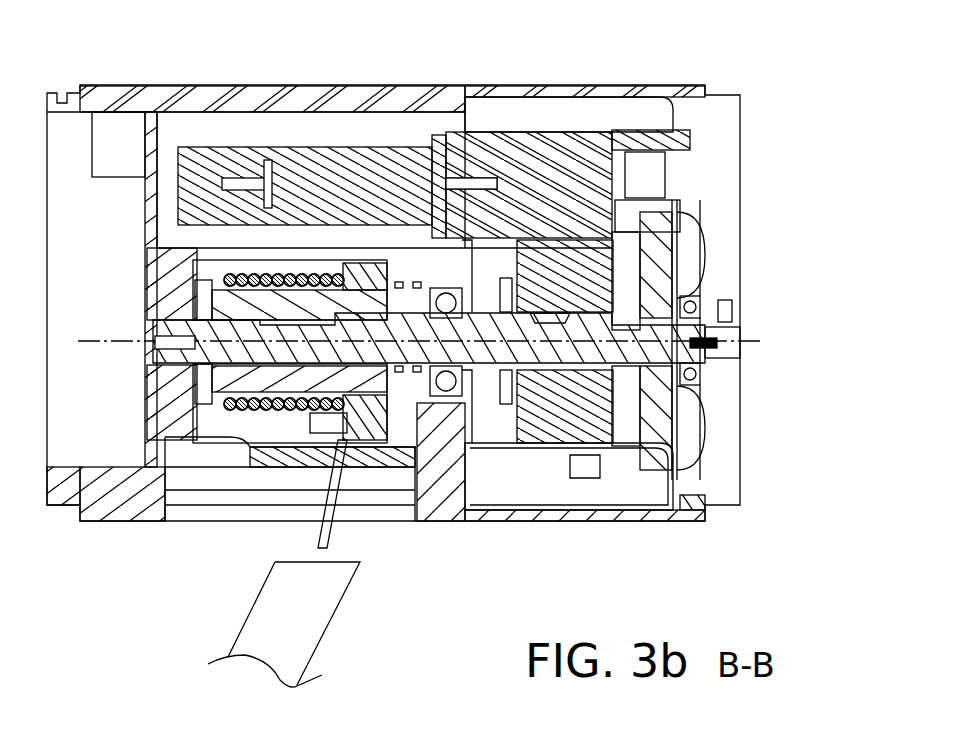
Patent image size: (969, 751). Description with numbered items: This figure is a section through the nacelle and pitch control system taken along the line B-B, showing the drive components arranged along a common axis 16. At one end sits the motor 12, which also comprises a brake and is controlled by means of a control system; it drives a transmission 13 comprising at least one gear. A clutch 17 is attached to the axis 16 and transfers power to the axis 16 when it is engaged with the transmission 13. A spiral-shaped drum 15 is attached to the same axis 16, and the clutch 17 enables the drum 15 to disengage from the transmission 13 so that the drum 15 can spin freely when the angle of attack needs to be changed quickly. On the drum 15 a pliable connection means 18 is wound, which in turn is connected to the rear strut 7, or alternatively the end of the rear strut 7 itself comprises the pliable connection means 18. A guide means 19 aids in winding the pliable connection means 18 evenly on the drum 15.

The motor 12 is at (350, 143).
The transmission 13 is at (543, 133).
The axis 16 is at (640, 345).
The spiral-shaped drum 15 is at (282, 380).
The guide means 19 is at (312, 413).
The pliable connection means 18 is at (323, 543).
The rear strut 7 is at (318, 602).
The clutch 17 is at (547, 420).